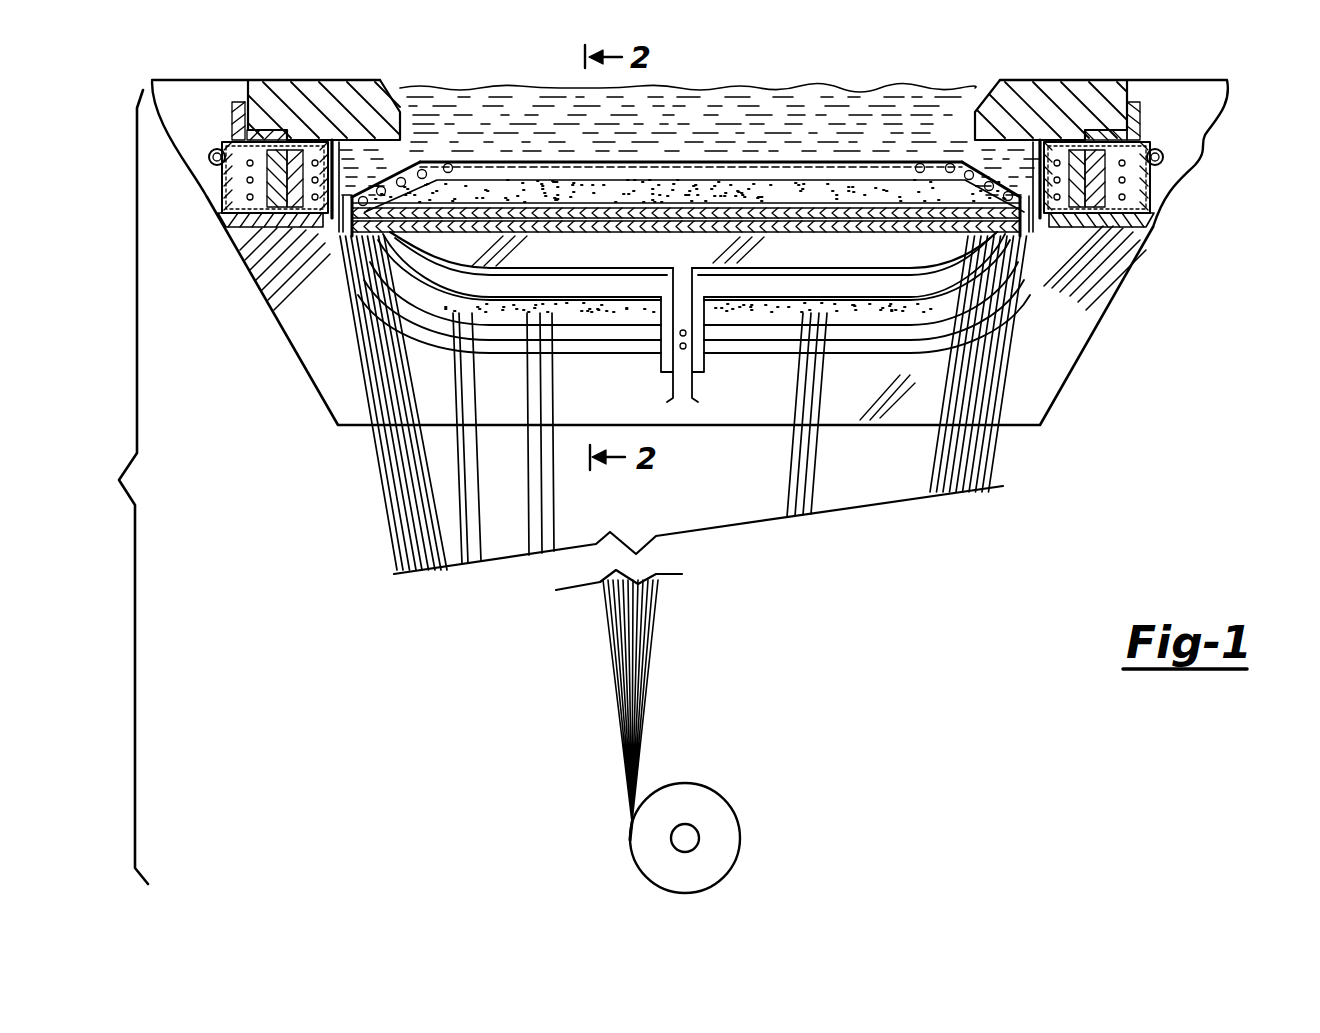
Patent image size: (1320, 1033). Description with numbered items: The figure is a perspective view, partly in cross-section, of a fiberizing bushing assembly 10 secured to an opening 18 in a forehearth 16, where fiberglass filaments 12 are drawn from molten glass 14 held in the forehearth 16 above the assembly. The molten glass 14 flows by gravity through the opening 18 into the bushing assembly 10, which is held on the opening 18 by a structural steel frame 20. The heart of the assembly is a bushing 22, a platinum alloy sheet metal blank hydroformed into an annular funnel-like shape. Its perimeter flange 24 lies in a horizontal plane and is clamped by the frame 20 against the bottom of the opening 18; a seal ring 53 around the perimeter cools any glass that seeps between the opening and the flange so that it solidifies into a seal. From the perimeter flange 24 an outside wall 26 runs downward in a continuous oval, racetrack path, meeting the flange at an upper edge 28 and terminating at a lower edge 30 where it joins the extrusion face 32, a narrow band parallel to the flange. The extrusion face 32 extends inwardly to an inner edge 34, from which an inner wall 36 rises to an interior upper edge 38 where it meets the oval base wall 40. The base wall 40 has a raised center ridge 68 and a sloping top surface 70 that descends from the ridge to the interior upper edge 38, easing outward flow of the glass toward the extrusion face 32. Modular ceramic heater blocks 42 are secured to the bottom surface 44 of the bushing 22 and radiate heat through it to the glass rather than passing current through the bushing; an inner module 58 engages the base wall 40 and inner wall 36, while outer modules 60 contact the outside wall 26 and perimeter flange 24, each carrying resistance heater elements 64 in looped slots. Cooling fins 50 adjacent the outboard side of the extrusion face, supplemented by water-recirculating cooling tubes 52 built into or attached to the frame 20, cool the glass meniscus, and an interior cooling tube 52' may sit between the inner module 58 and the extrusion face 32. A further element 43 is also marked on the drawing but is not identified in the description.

The fiberizing bushing assembly 10 is at (1070, 380).
The fiberglass filaments 12 is at (395, 487).
The molten glass 14 is at (692, 102).
The forehearth 16 is at (1200, 102).
The opening 18 is at (1057, 92).
The frame 20 is at (217, 218).
The bushing 22 is at (238, 130).
The perimeter flange 24 is at (1060, 145).
The outside wall 26 is at (1045, 233).
The upper edge 28 is at (1010, 220).
The lower edge 30 is at (1030, 225).
The extrusion face 32 is at (1017, 225).
The inner edge 34 is at (965, 232).
The inner wall 36 is at (960, 215).
The interior upper edge 38 is at (1015, 218).
The base wall 40 is at (420, 183).
The heater blocks 42 is at (257, 225).
The end wall 43 is at (363, 225).
The bottom surface 44 is at (640, 175).
The cooling fins 50 is at (501, 190).
The cooling tubes 52 is at (267, 238).
The cooling tube 52' is at (692, 259).
The seal ring 53 is at (1167, 162).
The inner module 58 is at (803, 187).
The outer modules 60 is at (1060, 236).
The resistance heater elements 64 is at (353, 196).
The raised center ridge 68 is at (713, 158).
The sloping top surface 70 is at (545, 162).